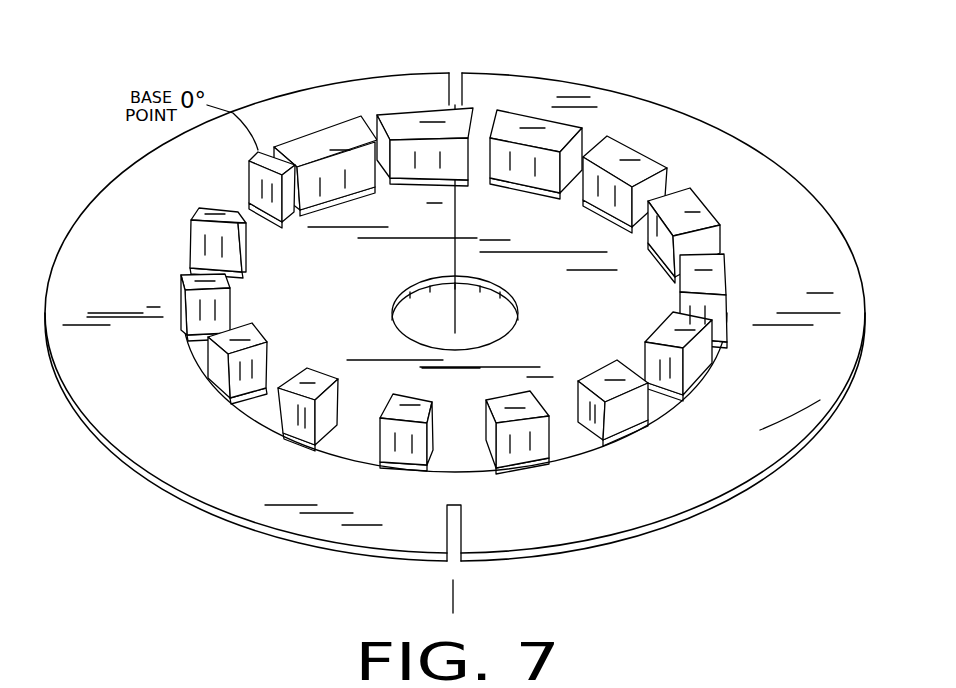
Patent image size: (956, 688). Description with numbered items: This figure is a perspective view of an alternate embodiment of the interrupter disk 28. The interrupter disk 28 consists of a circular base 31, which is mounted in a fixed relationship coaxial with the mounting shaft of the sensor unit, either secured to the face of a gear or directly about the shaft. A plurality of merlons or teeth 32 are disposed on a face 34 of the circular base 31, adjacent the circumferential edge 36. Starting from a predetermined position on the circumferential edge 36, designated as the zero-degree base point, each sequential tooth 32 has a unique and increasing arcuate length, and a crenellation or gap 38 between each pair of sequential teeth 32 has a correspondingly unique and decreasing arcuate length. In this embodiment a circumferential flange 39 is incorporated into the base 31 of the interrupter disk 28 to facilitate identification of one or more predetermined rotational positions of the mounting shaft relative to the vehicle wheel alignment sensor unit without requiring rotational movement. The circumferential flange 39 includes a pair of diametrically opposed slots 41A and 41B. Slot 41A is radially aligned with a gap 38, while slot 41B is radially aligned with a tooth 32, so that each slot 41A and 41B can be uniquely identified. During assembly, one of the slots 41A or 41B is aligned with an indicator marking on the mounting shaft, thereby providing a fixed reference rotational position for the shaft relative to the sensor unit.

The interrupter disk 28 is at (625, 112).
The circular base 31 is at (168, 273).
The teeth 32 is at (337, 140).
The face 34 is at (433, 200).
The circumferential edge 36 is at (240, 413).
The gap 38 is at (373, 123).
The circumferential flange 39 is at (765, 433).
The slot 41A is at (452, 563).
The slot 41B is at (456, 72).